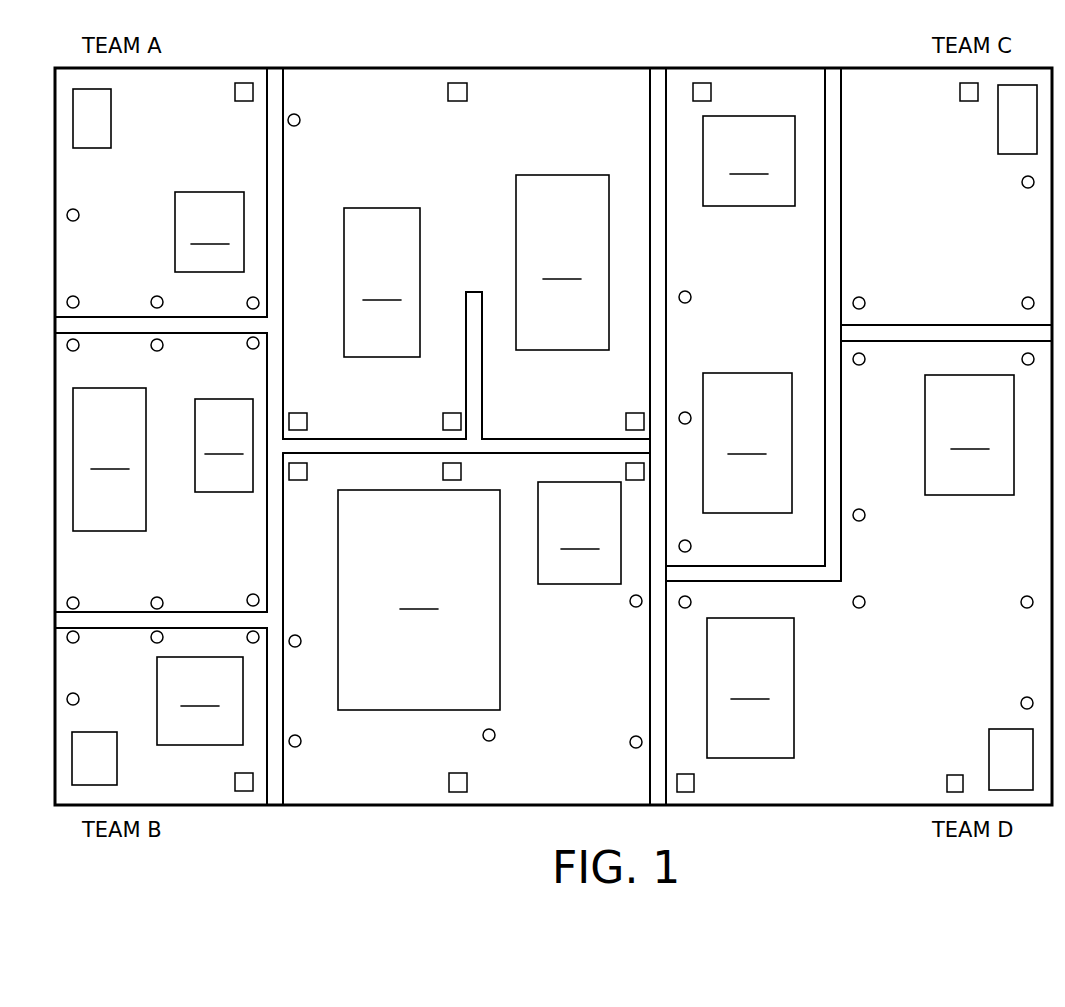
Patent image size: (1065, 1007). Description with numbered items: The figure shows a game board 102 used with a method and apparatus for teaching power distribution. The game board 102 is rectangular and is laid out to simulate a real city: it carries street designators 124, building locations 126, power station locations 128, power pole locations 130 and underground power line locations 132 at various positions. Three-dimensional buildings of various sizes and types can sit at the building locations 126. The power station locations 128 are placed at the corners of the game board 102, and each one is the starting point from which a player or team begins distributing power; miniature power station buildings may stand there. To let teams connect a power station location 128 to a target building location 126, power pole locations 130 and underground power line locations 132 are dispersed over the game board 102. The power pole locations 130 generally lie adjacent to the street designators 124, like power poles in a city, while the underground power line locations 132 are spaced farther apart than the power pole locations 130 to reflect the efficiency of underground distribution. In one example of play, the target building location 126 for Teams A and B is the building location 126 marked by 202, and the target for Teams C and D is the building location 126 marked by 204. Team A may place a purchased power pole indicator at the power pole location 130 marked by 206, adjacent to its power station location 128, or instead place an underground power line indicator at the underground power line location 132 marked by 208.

The game board 102 is at (572, 68).
The street designators 124 is at (183, 333).
The building locations 126 is at (543, 437).
The power station locations 128 is at (92, 148).
The power pole locations 130 is at (550, 441).
The underground power line locations 132 is at (571, 436).
The building location 202 is at (768, 373).
The building location 204 is at (213, 493).
The power pole location 206 is at (96, 206).
The underground power line location 208 is at (228, 112).